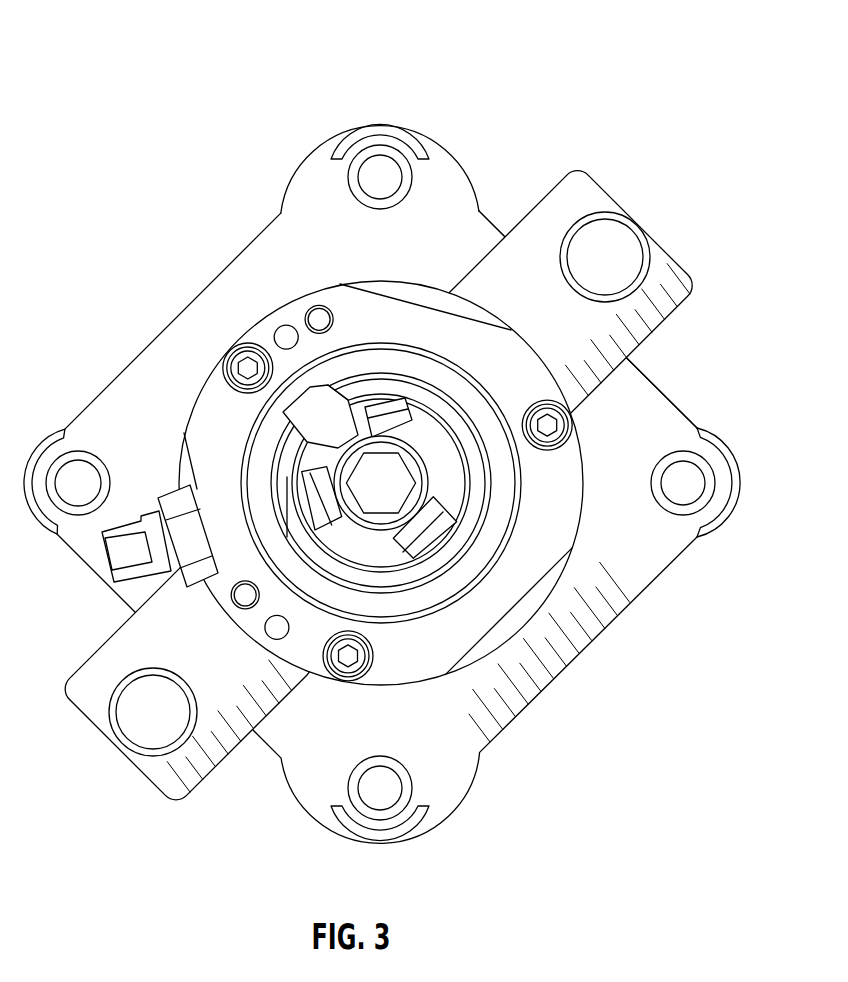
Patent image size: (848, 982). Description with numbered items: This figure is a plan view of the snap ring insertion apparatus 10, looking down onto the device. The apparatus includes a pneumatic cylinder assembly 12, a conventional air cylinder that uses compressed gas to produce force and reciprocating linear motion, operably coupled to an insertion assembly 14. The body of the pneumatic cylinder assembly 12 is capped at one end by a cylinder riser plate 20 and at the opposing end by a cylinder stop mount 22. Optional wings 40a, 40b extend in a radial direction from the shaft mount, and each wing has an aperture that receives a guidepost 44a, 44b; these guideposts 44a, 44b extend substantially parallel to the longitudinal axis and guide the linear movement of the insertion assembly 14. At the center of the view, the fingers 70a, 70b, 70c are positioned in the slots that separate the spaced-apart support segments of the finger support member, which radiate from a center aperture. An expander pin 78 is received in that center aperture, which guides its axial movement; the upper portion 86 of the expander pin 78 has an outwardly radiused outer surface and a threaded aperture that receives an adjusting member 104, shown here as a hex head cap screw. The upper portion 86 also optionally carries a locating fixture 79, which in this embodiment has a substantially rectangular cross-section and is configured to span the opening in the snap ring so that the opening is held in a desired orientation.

The snap ring insertion apparatus 10 is at (138, 42).
The pneumatic cylinder assembly 12 is at (642, 596).
The insertion assembly 14 is at (580, 447).
The cylinder riser plate 20 is at (488, 220).
The cylinder stop mount 22 is at (327, 145).
The wing 40a is at (198, 795).
The wing 40b is at (694, 295).
The guidepost 44a is at (128, 671).
The guidepost 44b is at (636, 226).
The finger 70a is at (452, 522).
The finger 70b is at (405, 413).
The finger 70c is at (300, 478).
The expander pin 78 is at (440, 492).
The locating fixture 79 is at (328, 403).
The upper portion 86 is at (430, 456).
The adjusting member 104 is at (393, 480).